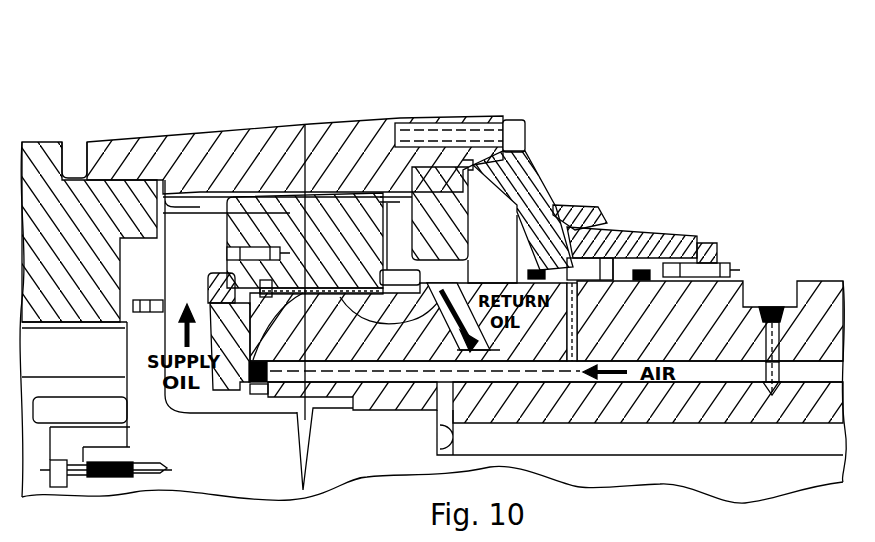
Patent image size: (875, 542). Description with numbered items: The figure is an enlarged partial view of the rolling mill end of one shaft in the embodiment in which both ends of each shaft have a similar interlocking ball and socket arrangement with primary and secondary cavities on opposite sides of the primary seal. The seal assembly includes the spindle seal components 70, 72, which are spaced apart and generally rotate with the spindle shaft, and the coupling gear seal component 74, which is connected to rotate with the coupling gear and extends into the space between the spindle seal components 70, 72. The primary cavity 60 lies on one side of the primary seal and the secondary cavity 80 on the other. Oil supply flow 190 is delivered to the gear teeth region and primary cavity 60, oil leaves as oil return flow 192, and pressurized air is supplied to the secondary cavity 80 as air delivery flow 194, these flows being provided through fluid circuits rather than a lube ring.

The oil supply flow 190 is at (187, 300).
The oil return flow 192 is at (348, 292).
The coupling gear seal component 74 is at (453, 283).
The primary cavity 60 is at (540, 198).
The spindle seal component 70 is at (578, 208).
The secondary cavity 80 is at (583, 243).
The spindle seal component 72 is at (630, 250).
The air delivery flow 194 is at (640, 285).